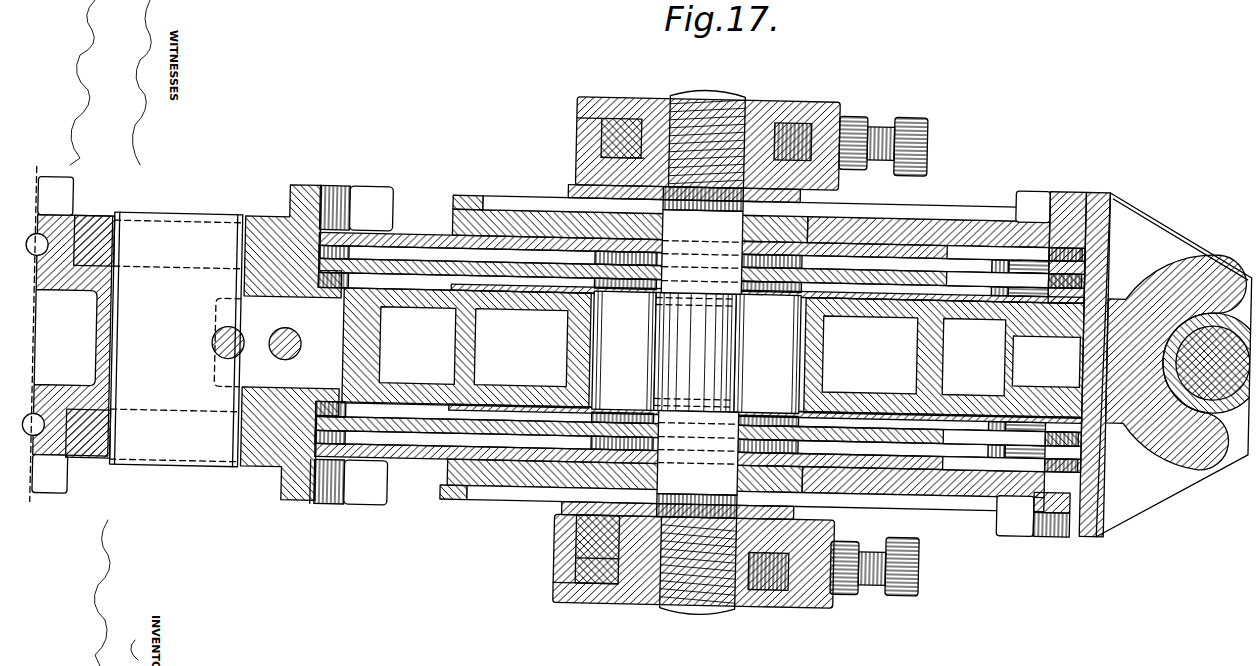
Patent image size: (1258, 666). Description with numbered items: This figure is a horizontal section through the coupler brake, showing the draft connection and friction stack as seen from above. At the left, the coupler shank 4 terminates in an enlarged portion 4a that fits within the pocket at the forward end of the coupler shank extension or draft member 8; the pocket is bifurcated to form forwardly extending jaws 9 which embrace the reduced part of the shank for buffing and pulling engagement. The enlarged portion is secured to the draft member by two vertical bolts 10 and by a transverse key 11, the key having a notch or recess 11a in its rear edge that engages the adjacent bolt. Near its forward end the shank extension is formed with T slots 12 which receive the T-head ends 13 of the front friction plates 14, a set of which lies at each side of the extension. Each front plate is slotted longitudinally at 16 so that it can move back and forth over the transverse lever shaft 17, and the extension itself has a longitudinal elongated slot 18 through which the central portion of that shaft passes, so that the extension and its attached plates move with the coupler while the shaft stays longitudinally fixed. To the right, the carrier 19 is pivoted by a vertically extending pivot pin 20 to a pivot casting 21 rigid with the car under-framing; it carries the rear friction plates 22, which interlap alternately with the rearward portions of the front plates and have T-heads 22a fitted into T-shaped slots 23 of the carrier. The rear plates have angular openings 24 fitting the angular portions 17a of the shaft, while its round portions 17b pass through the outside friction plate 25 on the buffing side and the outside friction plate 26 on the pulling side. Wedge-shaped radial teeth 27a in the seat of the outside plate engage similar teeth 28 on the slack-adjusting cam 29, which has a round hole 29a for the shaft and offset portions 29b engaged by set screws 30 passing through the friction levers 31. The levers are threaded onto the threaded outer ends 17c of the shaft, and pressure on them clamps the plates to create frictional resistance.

The shank 4 is at (67, 334).
The enlarged portion of the coupler shank 4a is at (112, 242).
The coupler shank extension or draft member 8 is at (510, 383).
The jaws 9 is at (86, 232).
The vertical bolts 10 is at (243, 338).
The transverse key 11 is at (176, 339).
The notch or recess 11a is at (212, 345).
The T slots 12 is at (333, 198).
The T-head ends 13 is at (320, 462).
The front friction plates 14 is at (413, 262).
The longitudinal slots 16 is at (640, 265).
The lever shaft 17 is at (728, 356).
The angular portions of the lever shaft 17a is at (700, 353).
The round portion of the lever shaft 17b is at (700, 352).
The threaded outer ends 17c is at (705, 108).
The longitudinal elongated slot 18 is at (624, 350).
The carrier 19 is at (1098, 244).
The pivot pin 20 is at (1215, 340).
The pivot casting 21 is at (1168, 452).
The rear friction plates 22 is at (968, 268).
The T-heads 22a is at (1082, 268).
The T-shaped slots 23 is at (1063, 198).
The angular openings 24 is at (742, 285).
The outside friction plate 25 is at (968, 483).
The outside friction plate 26 is at (948, 232).
The wedge-shaped radial teeth 27a is at (600, 204).
The wedge-shaped teeth 28 is at (580, 188).
The slack-adjusting cam 29 is at (600, 150).
The round hole 29a is at (590, 562).
The offset portions 29b is at (585, 122).
The set screws 30 is at (878, 128).
The friction levers 31 is at (612, 104).